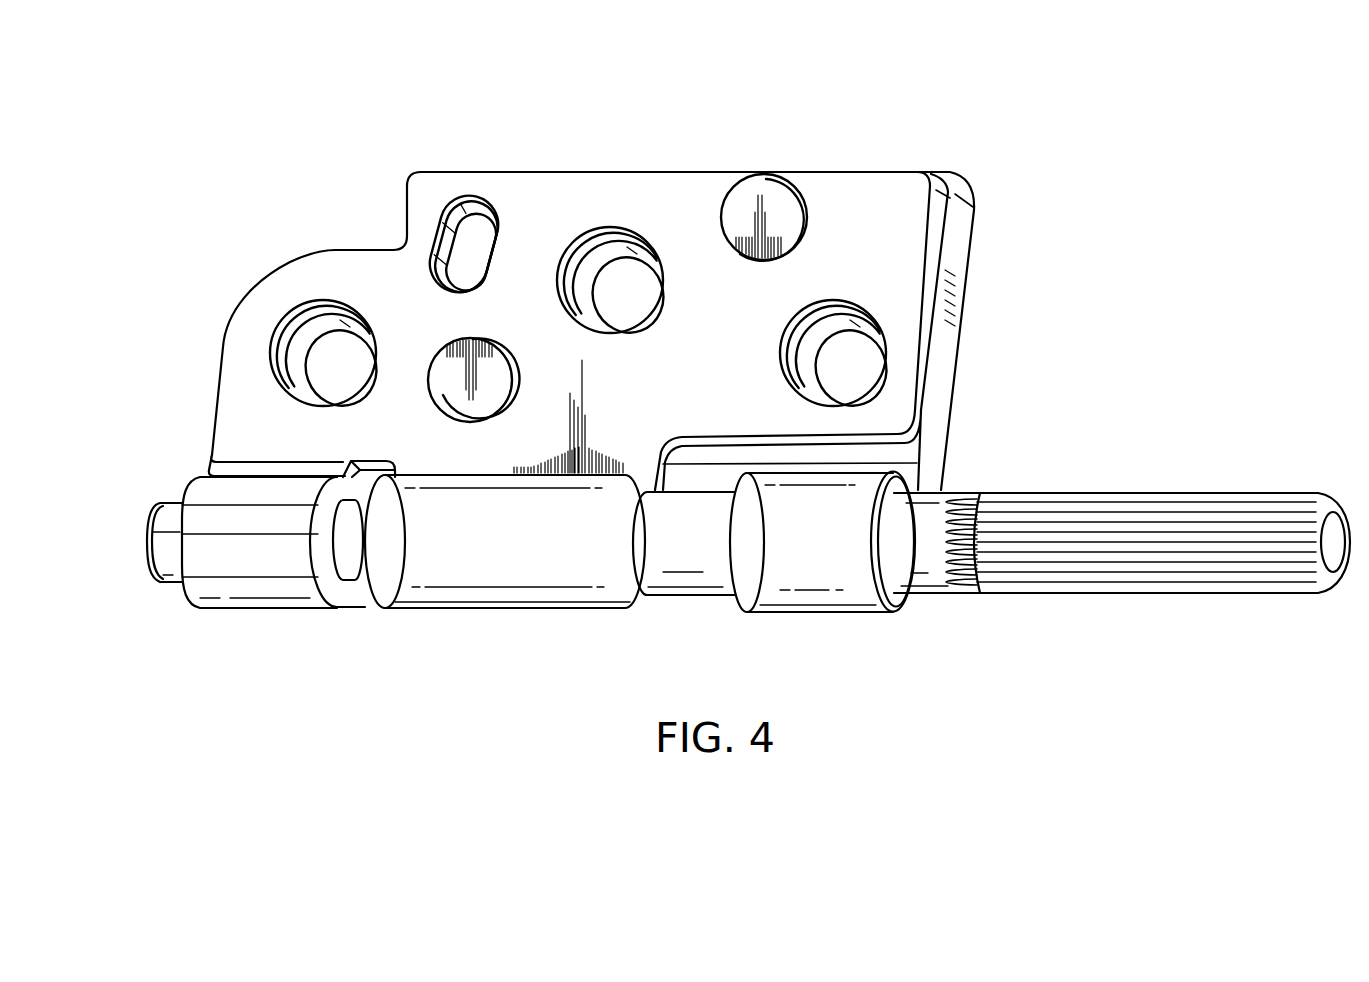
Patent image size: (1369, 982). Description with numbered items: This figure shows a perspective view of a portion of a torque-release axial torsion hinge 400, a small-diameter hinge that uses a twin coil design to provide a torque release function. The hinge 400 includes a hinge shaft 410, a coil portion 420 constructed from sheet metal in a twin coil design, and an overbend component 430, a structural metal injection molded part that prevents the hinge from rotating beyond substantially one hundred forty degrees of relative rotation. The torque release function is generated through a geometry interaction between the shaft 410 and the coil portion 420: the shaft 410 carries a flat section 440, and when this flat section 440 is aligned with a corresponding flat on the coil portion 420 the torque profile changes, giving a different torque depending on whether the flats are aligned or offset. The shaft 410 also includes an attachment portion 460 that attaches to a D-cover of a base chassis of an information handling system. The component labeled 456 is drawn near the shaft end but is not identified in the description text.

The torque-release axial torsion hinge 400 is at (1086, 98).
The hinge shaft 410 is at (350, 588).
The coil portion 420 is at (520, 636).
The overbend component 430 is at (692, 596).
The flat section on the shaft 440 is at (167, 522).
The first knuckle cylinder 456 is at (243, 520).
The attachment portion 460 is at (1137, 592).